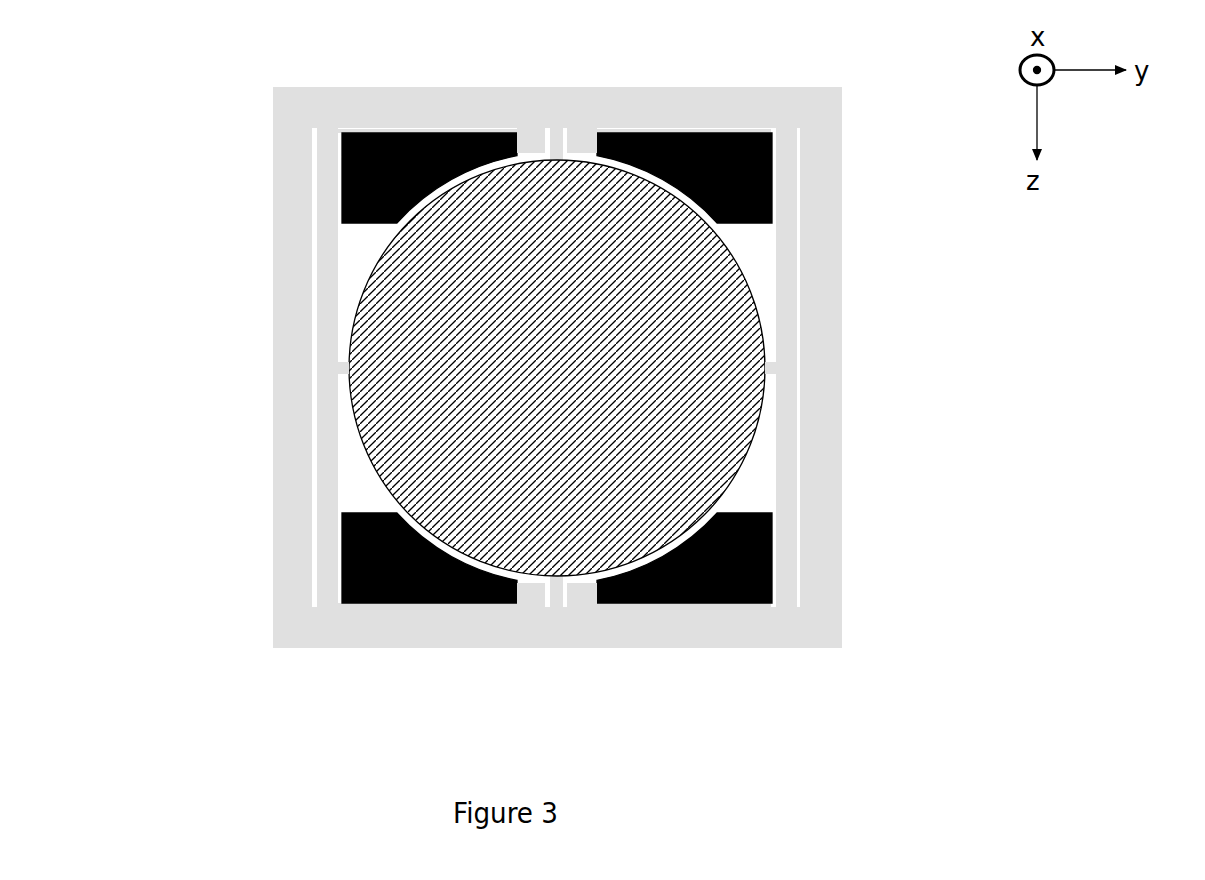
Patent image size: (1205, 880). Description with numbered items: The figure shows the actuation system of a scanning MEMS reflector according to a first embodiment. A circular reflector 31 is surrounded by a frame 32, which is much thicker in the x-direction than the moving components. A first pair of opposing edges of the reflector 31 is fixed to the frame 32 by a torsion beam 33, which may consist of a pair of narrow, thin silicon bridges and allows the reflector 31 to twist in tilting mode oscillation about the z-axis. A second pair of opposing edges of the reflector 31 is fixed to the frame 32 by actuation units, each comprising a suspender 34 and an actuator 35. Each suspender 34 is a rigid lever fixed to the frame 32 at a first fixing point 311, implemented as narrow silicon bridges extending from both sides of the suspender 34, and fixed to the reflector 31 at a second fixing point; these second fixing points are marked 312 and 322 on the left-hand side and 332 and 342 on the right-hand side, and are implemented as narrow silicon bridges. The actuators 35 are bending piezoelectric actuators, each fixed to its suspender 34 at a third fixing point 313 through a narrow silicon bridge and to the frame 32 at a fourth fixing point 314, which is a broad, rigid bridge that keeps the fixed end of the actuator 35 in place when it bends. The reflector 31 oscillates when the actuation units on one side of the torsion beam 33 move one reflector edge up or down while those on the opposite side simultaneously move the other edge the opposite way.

The reflector 31 is at (630, 320).
The frame 32 is at (810, 442).
The torsion beam 33 is at (557, 143).
The suspender 34 is at (324, 276).
The actuator 35 is at (360, 131).
The first fixing point 311 is at (321, 124).
The second fixing point 312 is at (334, 364).
The third fixing point 313 is at (340, 178).
The fourth fixing point 314 is at (526, 145).
The second fixing point 322 is at (334, 376).
The second fixing point 332 is at (772, 364).
The second fixing point 342 is at (772, 377).